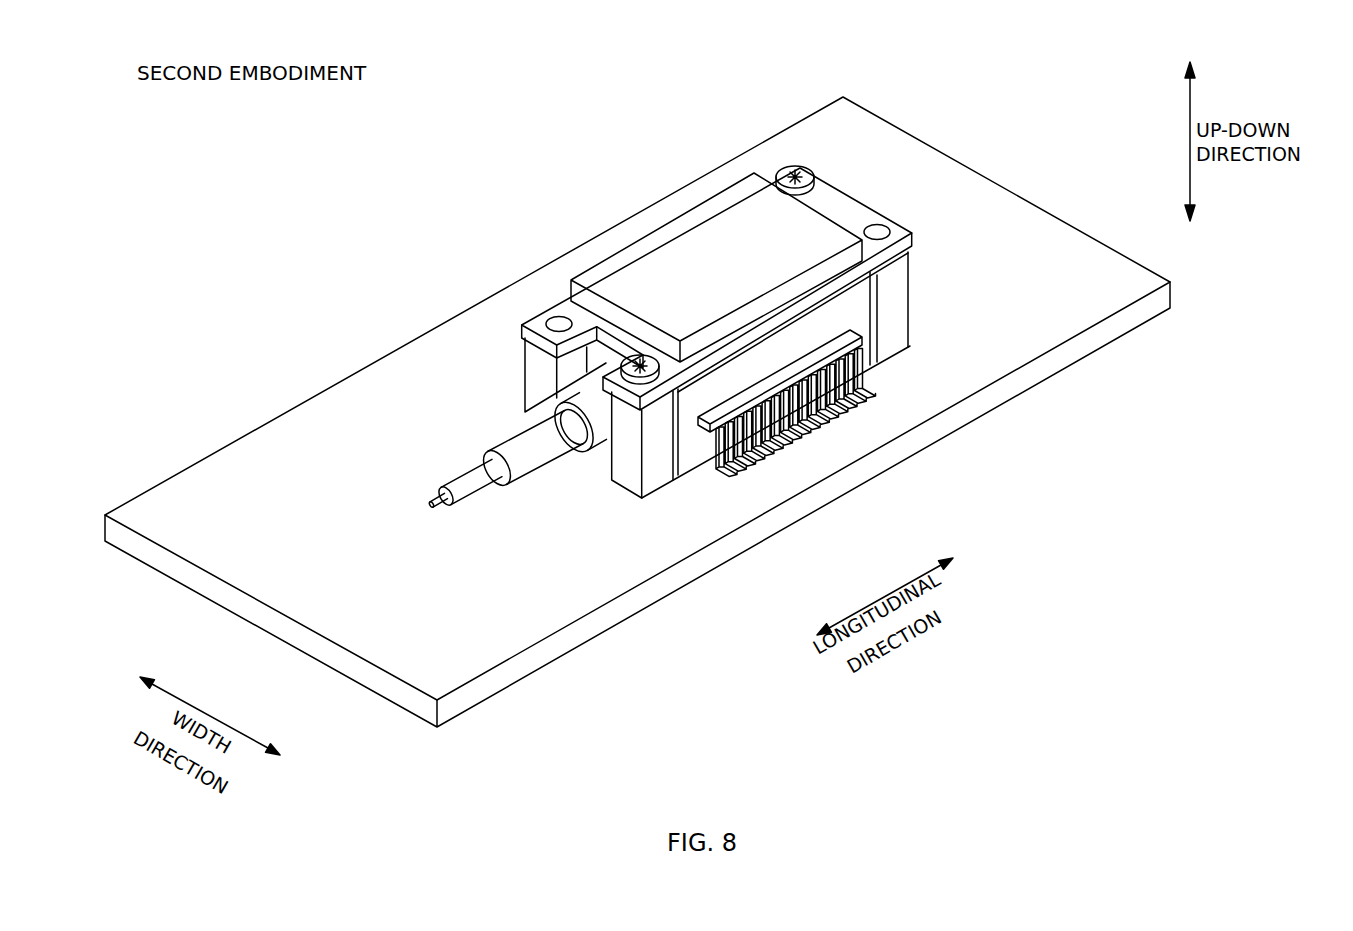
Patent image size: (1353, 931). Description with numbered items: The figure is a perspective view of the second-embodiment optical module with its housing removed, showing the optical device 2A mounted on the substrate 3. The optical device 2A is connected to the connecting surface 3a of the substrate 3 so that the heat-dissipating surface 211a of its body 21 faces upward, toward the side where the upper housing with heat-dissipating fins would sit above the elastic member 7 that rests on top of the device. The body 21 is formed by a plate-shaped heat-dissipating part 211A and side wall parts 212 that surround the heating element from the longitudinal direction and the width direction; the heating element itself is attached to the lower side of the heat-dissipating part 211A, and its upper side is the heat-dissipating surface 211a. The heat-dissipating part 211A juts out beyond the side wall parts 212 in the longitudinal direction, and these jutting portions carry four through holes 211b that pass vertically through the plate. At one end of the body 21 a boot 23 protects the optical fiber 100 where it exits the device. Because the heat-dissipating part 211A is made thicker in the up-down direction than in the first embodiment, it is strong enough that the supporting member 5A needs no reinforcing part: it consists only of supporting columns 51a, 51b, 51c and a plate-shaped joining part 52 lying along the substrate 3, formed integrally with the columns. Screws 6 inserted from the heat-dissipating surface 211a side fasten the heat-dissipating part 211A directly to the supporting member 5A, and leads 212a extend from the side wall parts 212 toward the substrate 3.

The substrate 3 is at (637, 412).
The connecting surface 3a is at (212, 470).
The optical device 2A is at (418, 432).
The supporting member 5A is at (940, 320).
The screws 6 is at (800, 170).
The elastic member 7 is at (691, 260).
The body 21 is at (998, 212).
The boot 23 is at (519, 500).
The supporting column 51a is at (631, 458).
The supporting column 51b is at (530, 383).
The supporting column 51c is at (895, 308).
The joining part 52 is at (703, 472).
The optical fiber 100 is at (432, 512).
The heat-dissipating part 211A is at (903, 245).
The heat-dissipating surface 211a is at (820, 197).
The through holes 211b is at (883, 230).
The side wall parts 212 is at (856, 303).
The lead pins 212a is at (860, 374).